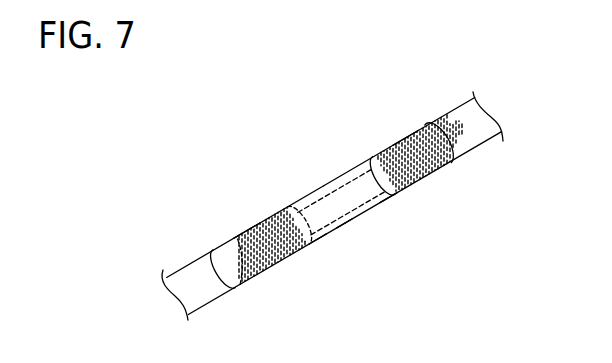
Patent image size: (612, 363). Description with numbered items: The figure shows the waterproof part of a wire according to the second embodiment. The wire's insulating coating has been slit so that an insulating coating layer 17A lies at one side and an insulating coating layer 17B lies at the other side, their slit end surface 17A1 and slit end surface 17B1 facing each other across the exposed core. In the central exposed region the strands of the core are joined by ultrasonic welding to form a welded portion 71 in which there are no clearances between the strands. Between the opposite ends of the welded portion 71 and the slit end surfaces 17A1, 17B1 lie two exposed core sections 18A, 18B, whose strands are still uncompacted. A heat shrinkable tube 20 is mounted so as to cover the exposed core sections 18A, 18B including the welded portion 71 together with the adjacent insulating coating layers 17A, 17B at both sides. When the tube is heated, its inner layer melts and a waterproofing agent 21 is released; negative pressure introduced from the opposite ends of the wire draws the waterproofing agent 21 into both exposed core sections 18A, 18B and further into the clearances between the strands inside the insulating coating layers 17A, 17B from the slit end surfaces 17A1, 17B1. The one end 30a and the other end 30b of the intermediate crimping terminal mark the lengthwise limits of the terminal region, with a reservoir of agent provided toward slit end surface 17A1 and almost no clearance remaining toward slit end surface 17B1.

The insulating coating layer 17A is at (179, 268).
The insulating coating layer 17B is at (477, 98).
The slit end surface 17A1 is at (246, 231).
The slit end surface 17B1 is at (407, 138).
The heat shrinkable tube 20 is at (325, 185).
The waterproofing agent 21 is at (271, 233).
The exposed core section 18A is at (284, 261).
The exposed core section 18B is at (417, 183).
The one end of the intermediate crimping terminal 30a is at (308, 246).
The another end of the intermediate crimping terminal 30b is at (396, 196).
The welded portion 71 is at (343, 220).